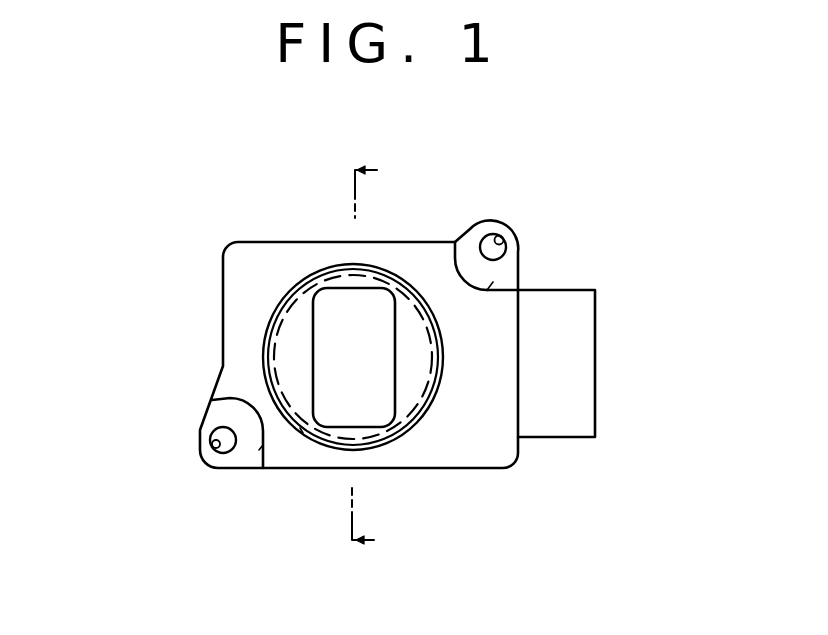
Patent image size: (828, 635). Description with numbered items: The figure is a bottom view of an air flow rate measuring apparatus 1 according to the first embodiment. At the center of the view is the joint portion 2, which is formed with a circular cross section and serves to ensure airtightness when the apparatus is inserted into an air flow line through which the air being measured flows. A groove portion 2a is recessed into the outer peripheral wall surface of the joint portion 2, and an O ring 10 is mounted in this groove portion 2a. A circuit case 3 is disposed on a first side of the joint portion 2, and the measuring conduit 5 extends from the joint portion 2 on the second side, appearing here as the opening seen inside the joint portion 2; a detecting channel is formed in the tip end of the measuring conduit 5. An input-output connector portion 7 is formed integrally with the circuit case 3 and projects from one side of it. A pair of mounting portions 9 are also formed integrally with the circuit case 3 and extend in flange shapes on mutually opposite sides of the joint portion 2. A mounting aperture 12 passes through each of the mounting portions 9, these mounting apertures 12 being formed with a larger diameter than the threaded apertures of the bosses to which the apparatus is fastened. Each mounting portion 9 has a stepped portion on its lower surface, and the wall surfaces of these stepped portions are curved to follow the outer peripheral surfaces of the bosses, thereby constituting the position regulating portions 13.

The air flow rate measuring apparatus 1 is at (218, 166).
The joint portion 2 is at (266, 321).
The groove portion 2a is at (408, 428).
The circuit case 3 is at (279, 241).
The measuring conduit 5 is at (323, 368).
The input-output connector portion 7 is at (567, 428).
The mounting portions 9 is at (492, 219).
The O ring 10 is at (303, 433).
The mounting aperture 12 is at (500, 236).
The position regulating portions 13 is at (493, 282).